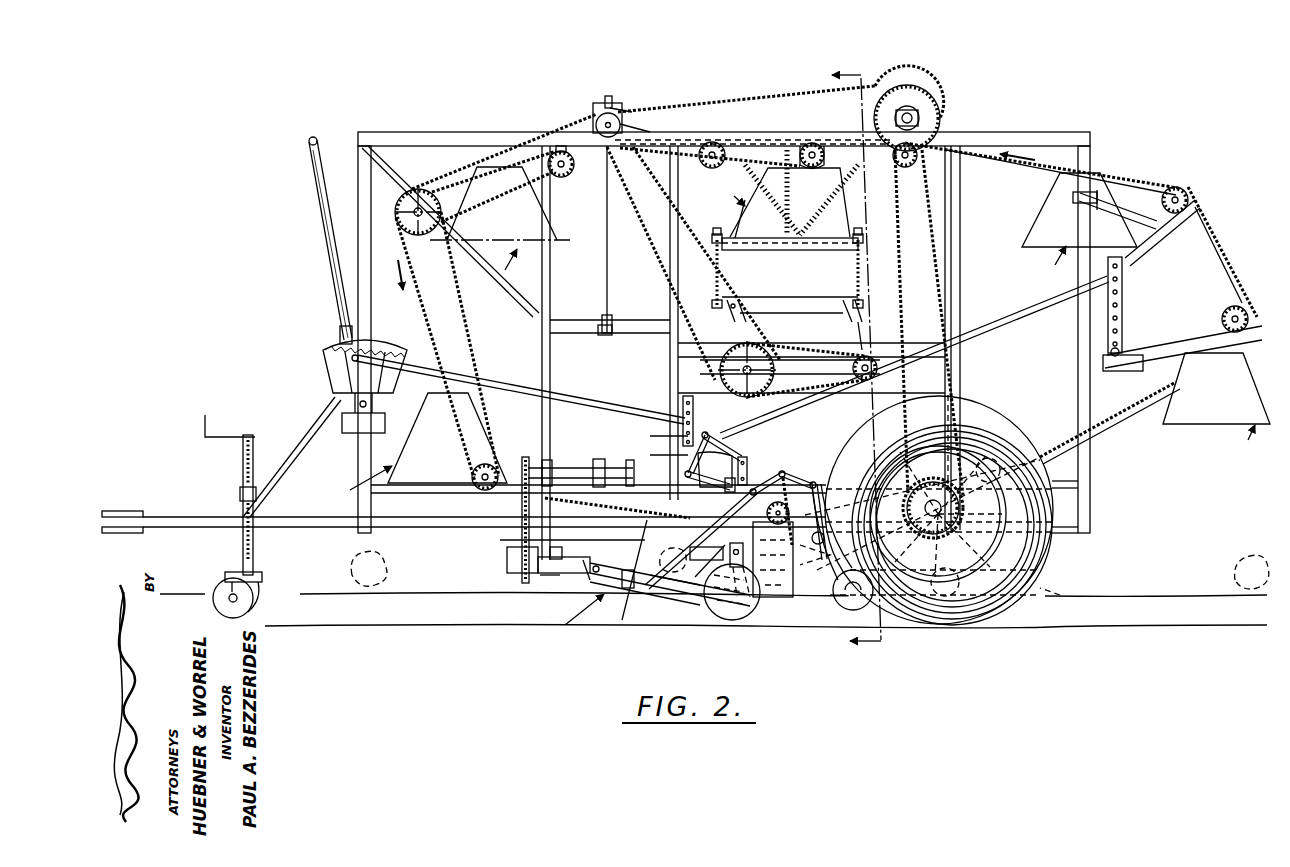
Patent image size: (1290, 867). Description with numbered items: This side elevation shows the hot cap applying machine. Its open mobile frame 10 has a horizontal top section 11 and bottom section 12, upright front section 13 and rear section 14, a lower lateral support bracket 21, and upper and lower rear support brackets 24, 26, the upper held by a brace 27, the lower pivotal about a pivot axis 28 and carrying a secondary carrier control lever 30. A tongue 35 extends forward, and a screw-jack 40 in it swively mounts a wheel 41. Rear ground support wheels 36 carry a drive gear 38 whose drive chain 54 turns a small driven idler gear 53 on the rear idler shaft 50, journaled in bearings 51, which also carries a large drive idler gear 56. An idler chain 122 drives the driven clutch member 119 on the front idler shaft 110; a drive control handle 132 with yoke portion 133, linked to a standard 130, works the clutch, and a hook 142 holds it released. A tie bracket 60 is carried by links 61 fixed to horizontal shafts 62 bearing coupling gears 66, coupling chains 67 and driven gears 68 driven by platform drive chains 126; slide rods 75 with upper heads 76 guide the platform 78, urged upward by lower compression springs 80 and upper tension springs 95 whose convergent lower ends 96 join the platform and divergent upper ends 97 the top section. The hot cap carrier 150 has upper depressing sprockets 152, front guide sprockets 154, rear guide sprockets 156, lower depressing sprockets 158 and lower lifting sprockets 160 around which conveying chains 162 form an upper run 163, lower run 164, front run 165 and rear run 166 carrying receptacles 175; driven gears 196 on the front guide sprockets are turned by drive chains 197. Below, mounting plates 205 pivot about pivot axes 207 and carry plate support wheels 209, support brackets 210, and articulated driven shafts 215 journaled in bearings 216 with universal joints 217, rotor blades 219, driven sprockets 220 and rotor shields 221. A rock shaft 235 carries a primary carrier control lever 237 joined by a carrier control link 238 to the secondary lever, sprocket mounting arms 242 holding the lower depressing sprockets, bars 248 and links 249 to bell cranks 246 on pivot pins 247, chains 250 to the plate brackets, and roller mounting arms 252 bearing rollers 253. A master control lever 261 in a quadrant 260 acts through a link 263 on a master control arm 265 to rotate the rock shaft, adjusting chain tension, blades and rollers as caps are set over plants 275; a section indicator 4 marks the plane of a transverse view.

The mobile frame 10 is at (720, 325).
The top section 11 is at (426, 129).
The bottom section 12 is at (439, 530).
The front section 13 is at (356, 238).
The rear section 14 is at (1092, 455).
The lower lateral support bracket 21 is at (545, 580).
The upper rear support bracket 24 is at (1160, 262).
The lower rear support bracket 26 is at (1178, 346).
The brace 27 is at (1130, 203).
The pivot axis 28 is at (1122, 348).
The secondary carrier control lever 30 is at (1124, 312).
The tongue 35 is at (178, 515).
The rear ground support wheels 36 is at (975, 616).
The drive gear 38 is at (950, 522).
The screw-jack 40 is at (243, 489).
The wheel 41 is at (253, 593).
The rear idler shaft 50 is at (928, 112).
The bearings 51 is at (926, 122).
The small driven idler gear 53 is at (913, 109).
The drive chain 54 is at (943, 281).
The large drive idler gear 56 is at (906, 92).
The tie bracket 60 is at (786, 300).
The links 61 is at (775, 332).
The horizontal shafts 62 is at (880, 369).
The coupling gears 66 is at (866, 348).
The coupling chains 67 is at (815, 356).
The driven gears 68 is at (730, 316).
The slide rods 75 is at (740, 255).
The upper heads 76 is at (715, 236).
The platform 78 is at (735, 240).
The lower compression springs 80 is at (715, 274).
The upper tension springs 95 is at (780, 197).
The convergent lower ends 96 is at (806, 232).
The divergent upper ends 97 is at (777, 148).
The front idler shaft 110 is at (633, 123).
The driven clutch member 119 is at (630, 112).
The idler chain 122 is at (700, 105).
The platform drive chains 126 is at (640, 240).
The standard 130 is at (600, 104).
The drive control handle 132 is at (604, 261).
The yoke portion 133 is at (614, 98).
The hook 142 is at (604, 334).
The hot cap carrier 150 is at (1115, 163).
The upper depressing sprockets 152 is at (705, 148).
The front guide sprockets 154 is at (566, 180).
The rear guide sprockets 156 is at (1190, 200).
The lower depressing sprockets 158 is at (783, 500).
The lower lifting sprockets 160 is at (940, 572).
The conveying chains 162 is at (1015, 150).
The upper longitudinal run 163 is at (762, 138).
The lower longitudinal run 164 is at (582, 493).
The front run 165 is at (440, 330).
The rear run 166 is at (1144, 406).
The hot cap holding receptacles 175 is at (786, 407).
The driven gears 196 is at (425, 228).
The drive chains 197 is at (522, 136).
The mounting plates 205 is at (677, 600).
The pivot axes 207 is at (580, 583).
The plate support wheels 209 is at (723, 602).
The support brackets 210 is at (660, 603).
The driven shafts 215 is at (641, 593).
The bearings 216 is at (626, 592).
The universal joints 217 is at (595, 574).
The rotor blades 219 is at (763, 600).
The driven sprockets 220 is at (520, 574).
The rotor shields 221 is at (793, 600).
The rock shaft 235 is at (688, 456).
The primary carrier control lever 237 is at (688, 437).
The carrier control link 238 is at (1010, 320).
The sprocket mounting arms 242 is at (718, 504).
The bell cranks 246 is at (780, 478).
The pivot pins 247 is at (757, 478).
The bars 248 is at (706, 465).
The links 249 is at (707, 430).
The chains 250 is at (806, 572).
The roller mounting arms 252 is at (815, 480).
The rollers 253 is at (852, 612).
The quadrant 260 is at (322, 366).
The master control lever 261 is at (322, 200).
The link 263 is at (490, 378).
The master control arm 265 is at (683, 410).
The plants 275 is at (368, 590).
The section line 4 is at (867, 354).